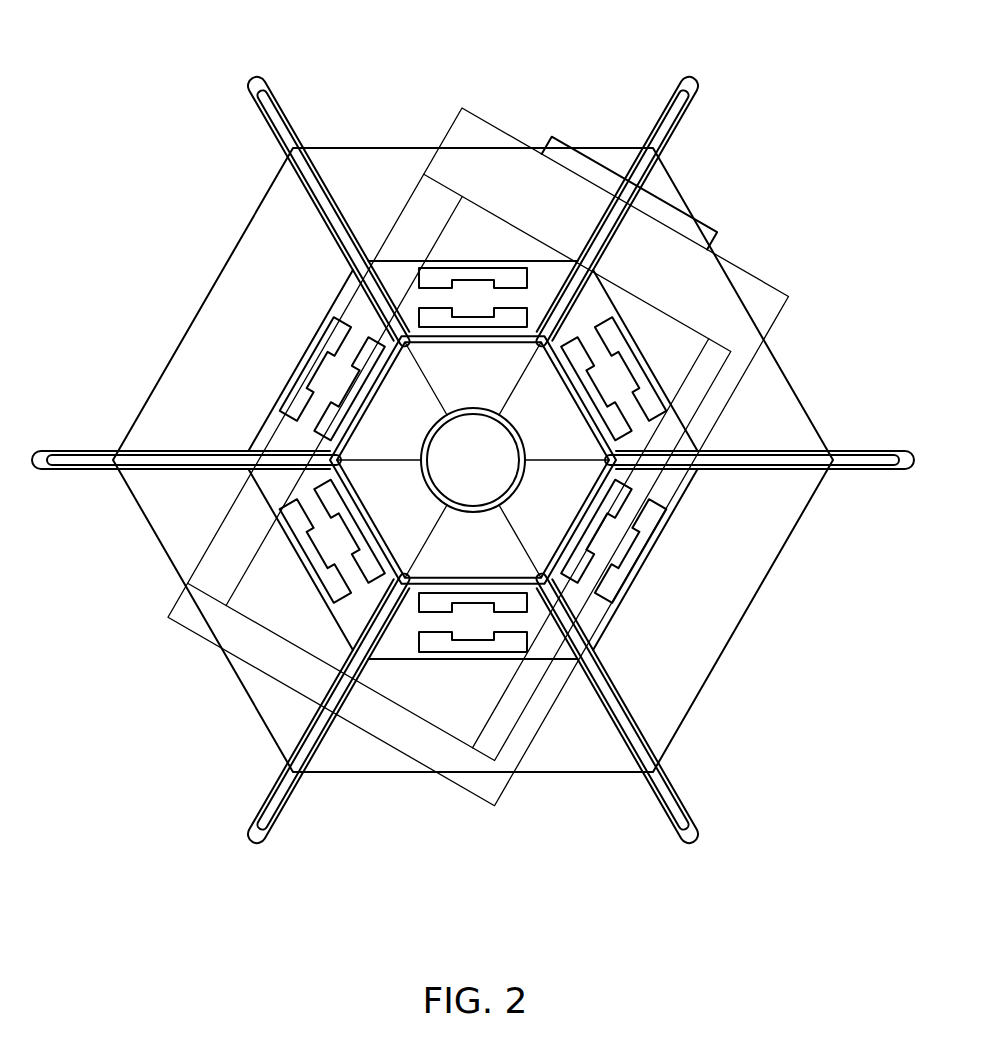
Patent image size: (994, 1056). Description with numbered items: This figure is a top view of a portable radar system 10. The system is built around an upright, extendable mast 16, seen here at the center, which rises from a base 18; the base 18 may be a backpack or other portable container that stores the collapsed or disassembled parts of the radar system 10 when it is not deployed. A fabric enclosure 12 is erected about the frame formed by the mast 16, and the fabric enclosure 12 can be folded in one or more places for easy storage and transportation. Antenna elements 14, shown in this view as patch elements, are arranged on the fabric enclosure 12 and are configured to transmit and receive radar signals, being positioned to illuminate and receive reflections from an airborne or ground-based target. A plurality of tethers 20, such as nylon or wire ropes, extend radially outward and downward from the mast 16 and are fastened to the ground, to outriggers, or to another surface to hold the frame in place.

The portable radar system 10 is at (182, 197).
The fabric enclosure 12 is at (340, 157).
The antenna elements 14 is at (648, 362).
The mast 16 is at (448, 468).
The base 18 is at (765, 302).
The tethers 20 is at (683, 100).